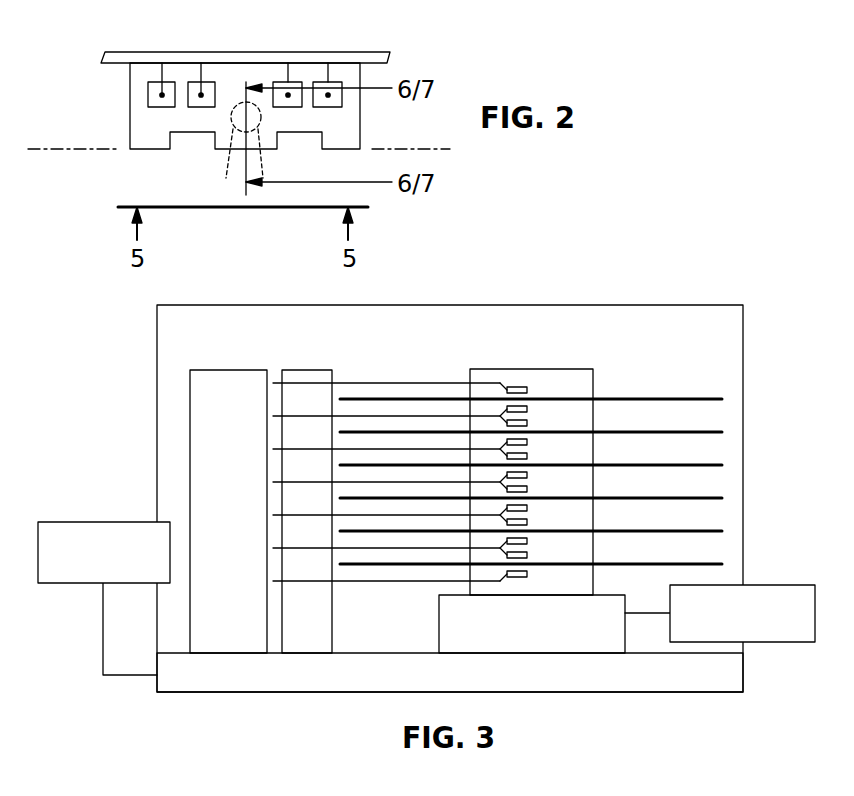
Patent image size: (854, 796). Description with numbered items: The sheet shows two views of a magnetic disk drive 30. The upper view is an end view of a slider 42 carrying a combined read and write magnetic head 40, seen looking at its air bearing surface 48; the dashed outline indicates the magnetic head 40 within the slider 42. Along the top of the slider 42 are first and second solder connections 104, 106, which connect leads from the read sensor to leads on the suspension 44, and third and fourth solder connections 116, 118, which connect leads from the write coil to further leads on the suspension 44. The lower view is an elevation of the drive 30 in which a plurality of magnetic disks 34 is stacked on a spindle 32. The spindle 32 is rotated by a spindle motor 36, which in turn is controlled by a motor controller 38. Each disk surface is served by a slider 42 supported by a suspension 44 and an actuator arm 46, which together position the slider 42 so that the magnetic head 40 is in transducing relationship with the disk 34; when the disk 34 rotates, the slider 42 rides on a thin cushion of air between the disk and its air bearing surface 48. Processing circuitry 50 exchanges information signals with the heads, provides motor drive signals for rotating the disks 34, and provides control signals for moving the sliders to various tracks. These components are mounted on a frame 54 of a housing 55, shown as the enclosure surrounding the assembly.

In FIG. 3, the magnetic disk drive 30 is at (645, 368).
In FIG. 3, the spindle 32 is at (581, 369).
In FIG. 3, the magnetic disk 34 is at (722, 399).
In FIG. 3, the spindle motor 36 is at (545, 634).
In FIG. 3, the motor controller 38 is at (773, 643).
In FIG. 2, the magnetic head 40 is at (224, 175).
In FIG. 2, the slider 42 is at (130, 97).
In FIG. 3, the slider 42 is at (527, 394).
In FIG. 3, the suspension 44 is at (481, 386).
In FIG. 3, the actuator arm 46 is at (437, 416).
In FIG. 2, the air bearing surface 48 is at (53, 153).
In FIG. 3, the processing circuitry 50 is at (77, 522).
In FIG. 3, the frame 54 is at (207, 693).
In FIG. 3, the housing 55 is at (685, 305).
In FIG. 2, the first solder connection 104 is at (148, 88).
In FIG. 2, the second solder connection 106 is at (320, 82).
In FIG. 2, the third solder connection 116 is at (188, 88).
In FIG. 2, the fourth solder connection 118 is at (280, 82).